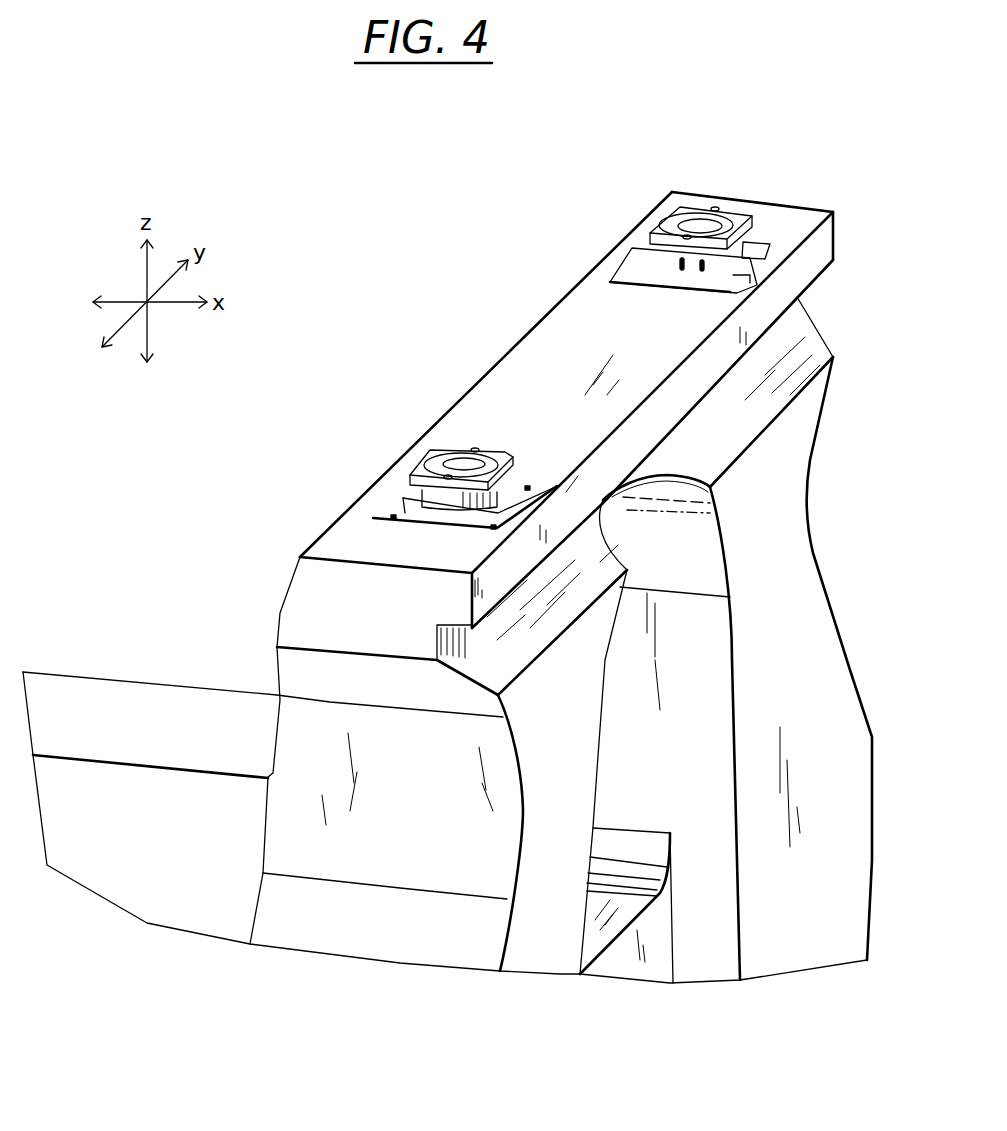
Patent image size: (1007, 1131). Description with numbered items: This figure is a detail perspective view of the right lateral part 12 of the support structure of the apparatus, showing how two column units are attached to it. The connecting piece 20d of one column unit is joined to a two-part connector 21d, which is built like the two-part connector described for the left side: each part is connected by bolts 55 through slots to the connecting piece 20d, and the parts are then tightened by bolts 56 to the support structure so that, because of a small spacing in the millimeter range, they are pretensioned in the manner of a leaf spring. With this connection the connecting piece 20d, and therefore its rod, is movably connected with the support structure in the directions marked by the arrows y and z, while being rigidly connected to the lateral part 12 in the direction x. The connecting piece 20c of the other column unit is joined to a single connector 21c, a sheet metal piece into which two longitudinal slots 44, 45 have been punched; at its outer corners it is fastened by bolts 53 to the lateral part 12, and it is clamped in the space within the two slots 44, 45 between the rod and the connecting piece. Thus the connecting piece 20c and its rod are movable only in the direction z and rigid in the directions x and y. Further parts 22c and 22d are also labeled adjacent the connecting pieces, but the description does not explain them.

The right lateral part 12 is at (797, 460).
The connecting piece 20c is at (393, 470).
The connecting piece 20d is at (633, 233).
The connector 21c is at (373, 518).
The two-part connector 21d is at (763, 250).
The bearing block 22c is at (432, 449).
The bearing block 22d is at (680, 207).
The longitudinal slot 44 is at (402, 500).
The longitudinal slot 45 is at (513, 497).
The bolt 53 is at (493, 528).
The bolt 55 is at (680, 268).
The bolt 56 is at (730, 288).